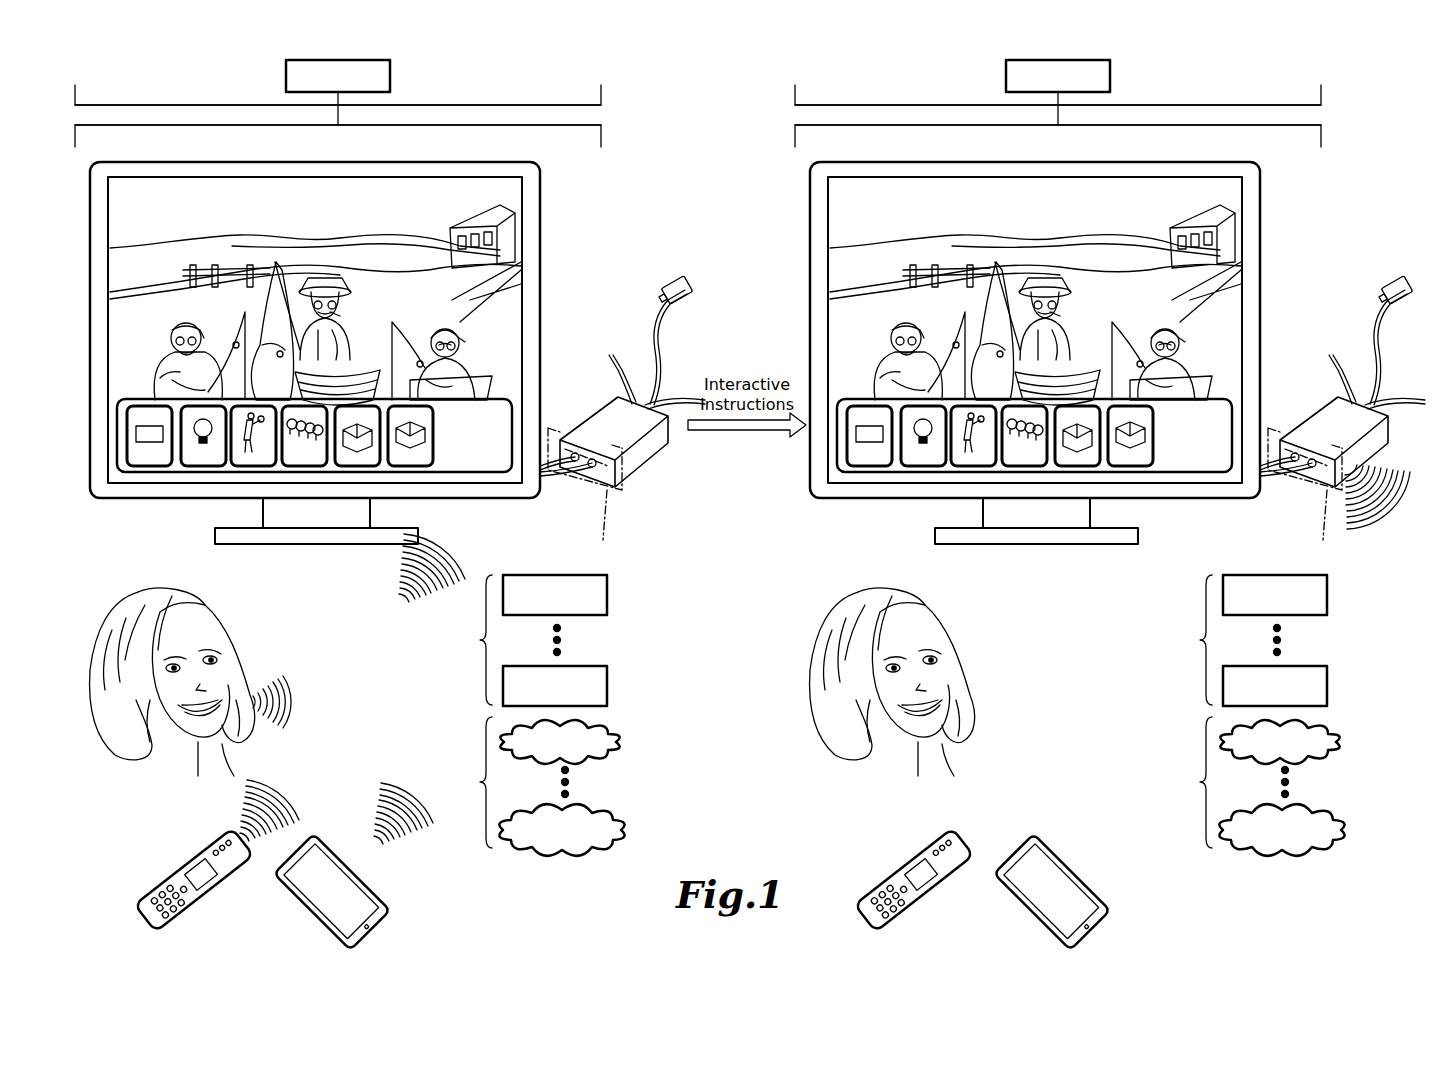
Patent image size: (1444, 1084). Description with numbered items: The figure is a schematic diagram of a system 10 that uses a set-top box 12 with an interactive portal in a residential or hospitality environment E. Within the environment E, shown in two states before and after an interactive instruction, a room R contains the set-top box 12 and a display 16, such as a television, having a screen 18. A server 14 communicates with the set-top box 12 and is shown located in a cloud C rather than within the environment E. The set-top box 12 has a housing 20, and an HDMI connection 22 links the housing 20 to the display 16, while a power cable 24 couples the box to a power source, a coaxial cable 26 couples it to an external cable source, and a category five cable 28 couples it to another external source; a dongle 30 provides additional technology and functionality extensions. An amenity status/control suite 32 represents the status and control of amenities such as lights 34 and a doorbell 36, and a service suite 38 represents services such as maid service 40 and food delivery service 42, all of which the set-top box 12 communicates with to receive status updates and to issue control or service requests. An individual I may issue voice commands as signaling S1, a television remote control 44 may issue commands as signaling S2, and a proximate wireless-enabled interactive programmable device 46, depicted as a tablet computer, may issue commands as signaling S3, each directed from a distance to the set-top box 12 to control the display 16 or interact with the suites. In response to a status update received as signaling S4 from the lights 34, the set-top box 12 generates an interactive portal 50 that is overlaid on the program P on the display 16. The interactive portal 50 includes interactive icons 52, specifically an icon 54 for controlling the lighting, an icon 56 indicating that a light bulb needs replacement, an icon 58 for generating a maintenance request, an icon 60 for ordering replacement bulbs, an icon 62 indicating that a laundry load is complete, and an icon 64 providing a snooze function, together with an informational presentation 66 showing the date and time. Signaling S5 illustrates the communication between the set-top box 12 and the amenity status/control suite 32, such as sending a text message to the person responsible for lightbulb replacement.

The system 10 is at (648, 214).
The set-top box 12 is at (640, 461).
The server 14 is at (392, 77).
The display 16 is at (548, 242).
The screen 18 is at (370, 212).
The housing 20 is at (606, 428).
The HDMI connection 22 is at (566, 470).
The power cable 24 is at (551, 472).
The coaxial cable 26 is at (622, 362).
The category five (Cat 5) cable 28 is at (681, 400).
The dongle 30 is at (686, 279).
The amenity status/control suite 32 is at (356, 645).
The lights 34 is at (610, 594).
The doorbell 36 is at (610, 684).
The service suite 38 is at (378, 780).
The maid service 40 is at (622, 742).
The food delivery service 42 is at (627, 832).
The television remote control 44 is at (178, 868).
The proximate wireless-enabled interactive programmable device 46 is at (361, 913).
The interactive portal 50 is at (121, 480).
The interactive icons 52 is at (143, 394).
The icon 54 is at (153, 466).
The icon 56 is at (205, 466).
The icon 58 is at (249, 466).
The icon 60 is at (307, 466).
The icon 62 is at (359, 466).
The icon 64 is at (412, 466).
The informational presentation 66 is at (478, 466).
The cloud C is at (338, 93).
The room R is at (338, 139).
The environment E is at (602, 114).
The program P is at (297, 212).
The individual I is at (153, 590).
The signaling S1 is at (300, 706).
The signaling S2 is at (242, 815).
The signaling S3 is at (418, 845).
The signaling S4 is at (404, 568).
The signaling S5 is at (1397, 527).